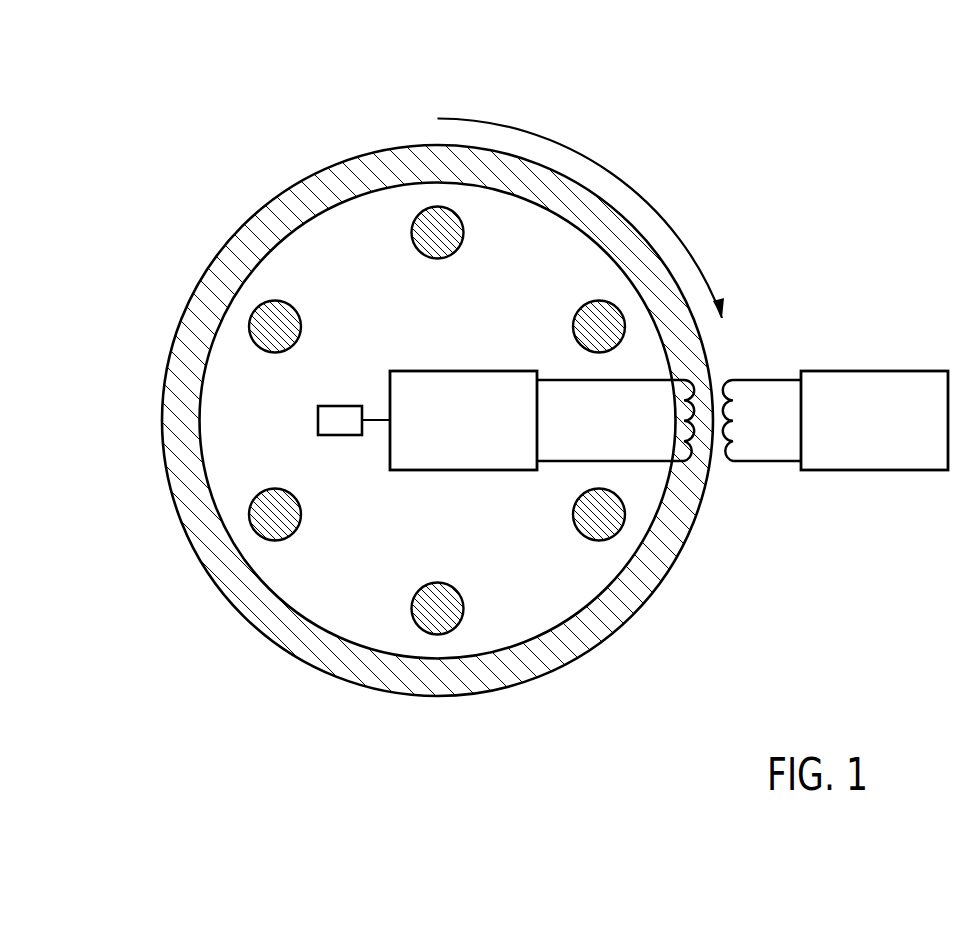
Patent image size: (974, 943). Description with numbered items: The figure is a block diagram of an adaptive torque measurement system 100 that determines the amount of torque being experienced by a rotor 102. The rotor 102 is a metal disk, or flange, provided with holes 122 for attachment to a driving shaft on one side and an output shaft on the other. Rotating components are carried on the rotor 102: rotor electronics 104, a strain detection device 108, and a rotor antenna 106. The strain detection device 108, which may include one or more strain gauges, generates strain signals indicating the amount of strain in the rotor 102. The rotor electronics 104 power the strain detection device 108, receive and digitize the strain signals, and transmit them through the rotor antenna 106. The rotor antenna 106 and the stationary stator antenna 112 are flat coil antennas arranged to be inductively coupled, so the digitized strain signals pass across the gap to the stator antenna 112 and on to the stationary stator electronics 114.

The adaptive torque measurement system 100 is at (197, 122).
The rotor 102 is at (343, 225).
The rotor antenna 106 is at (237, 233).
The holes 122 is at (573, 327).
The rotor electronics 104 is at (455, 370).
The strain detection device 108 is at (342, 405).
The stator antenna 112 is at (773, 379).
The stator electronics 114 is at (875, 471).